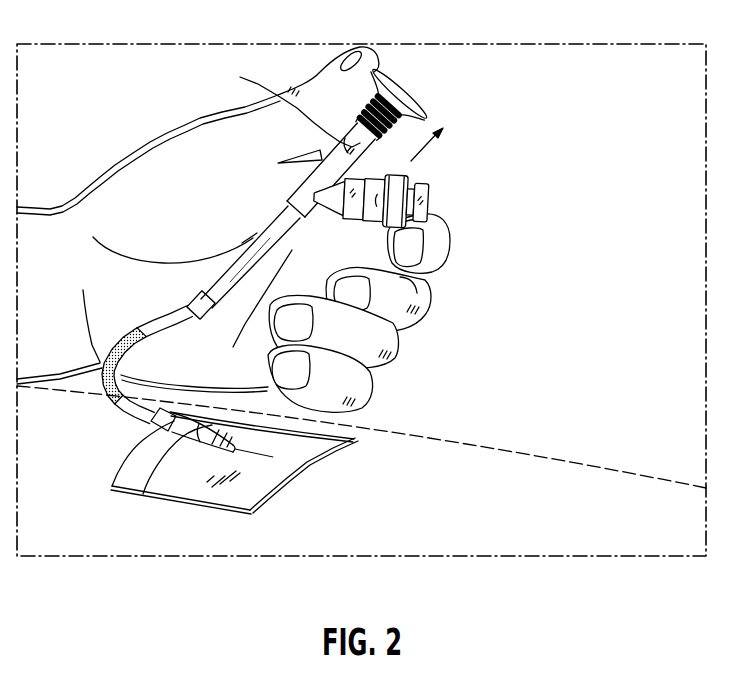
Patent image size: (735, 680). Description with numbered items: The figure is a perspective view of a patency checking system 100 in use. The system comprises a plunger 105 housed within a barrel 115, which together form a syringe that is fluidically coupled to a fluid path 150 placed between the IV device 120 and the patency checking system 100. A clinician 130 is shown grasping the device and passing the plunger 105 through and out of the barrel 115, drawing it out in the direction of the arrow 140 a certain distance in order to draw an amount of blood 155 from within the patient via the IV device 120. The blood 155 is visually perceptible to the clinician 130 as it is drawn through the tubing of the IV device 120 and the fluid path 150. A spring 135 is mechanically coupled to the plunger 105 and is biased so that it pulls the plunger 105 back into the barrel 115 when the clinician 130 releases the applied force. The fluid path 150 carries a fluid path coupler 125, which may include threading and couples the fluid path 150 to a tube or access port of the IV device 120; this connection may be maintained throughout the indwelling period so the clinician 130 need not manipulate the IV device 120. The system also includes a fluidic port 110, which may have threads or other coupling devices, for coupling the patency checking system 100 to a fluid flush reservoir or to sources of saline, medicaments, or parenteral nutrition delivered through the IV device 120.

The patency checking system 100 is at (424, 81).
The plunger 105 is at (424, 114).
The fluidic port 110 is at (428, 188).
The barrel 115 is at (241, 77).
The IV device 120 is at (143, 494).
The fluid path coupler 125 is at (188, 305).
The clinician 130 is at (140, 182).
The spring 135 is at (355, 138).
The arrow 140 is at (433, 146).
The fluid path 150 is at (248, 262).
The blood 155 is at (127, 404).